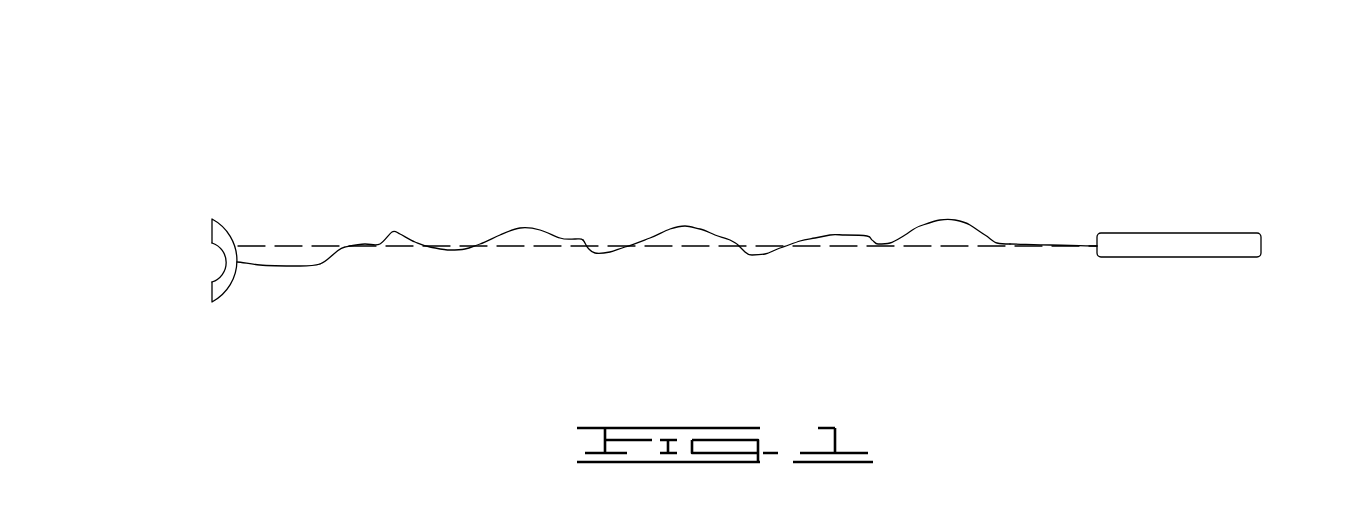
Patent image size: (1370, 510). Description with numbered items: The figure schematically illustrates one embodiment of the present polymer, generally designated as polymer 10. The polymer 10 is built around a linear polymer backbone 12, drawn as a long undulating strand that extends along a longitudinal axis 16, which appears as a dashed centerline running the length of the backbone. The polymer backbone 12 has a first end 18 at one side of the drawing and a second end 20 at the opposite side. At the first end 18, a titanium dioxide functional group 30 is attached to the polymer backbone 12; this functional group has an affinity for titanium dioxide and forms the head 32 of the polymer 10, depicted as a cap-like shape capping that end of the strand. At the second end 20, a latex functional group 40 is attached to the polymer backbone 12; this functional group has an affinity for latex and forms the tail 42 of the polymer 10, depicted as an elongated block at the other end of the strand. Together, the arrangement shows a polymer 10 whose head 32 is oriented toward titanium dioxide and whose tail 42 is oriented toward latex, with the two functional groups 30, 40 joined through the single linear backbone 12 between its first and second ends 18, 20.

The polymer 10 is at (1032, 84).
The linear polymer backbone 12 is at (667, 237).
The longitudinal axis 16 is at (518, 251).
The first end 18 is at (238, 263).
The second end 20 is at (1096, 242).
The titanium dioxide functional group 30 is at (172, 260).
The head 32 is at (198, 302).
The latex functional group 40 is at (1214, 254).
The tail 42 is at (1205, 268).